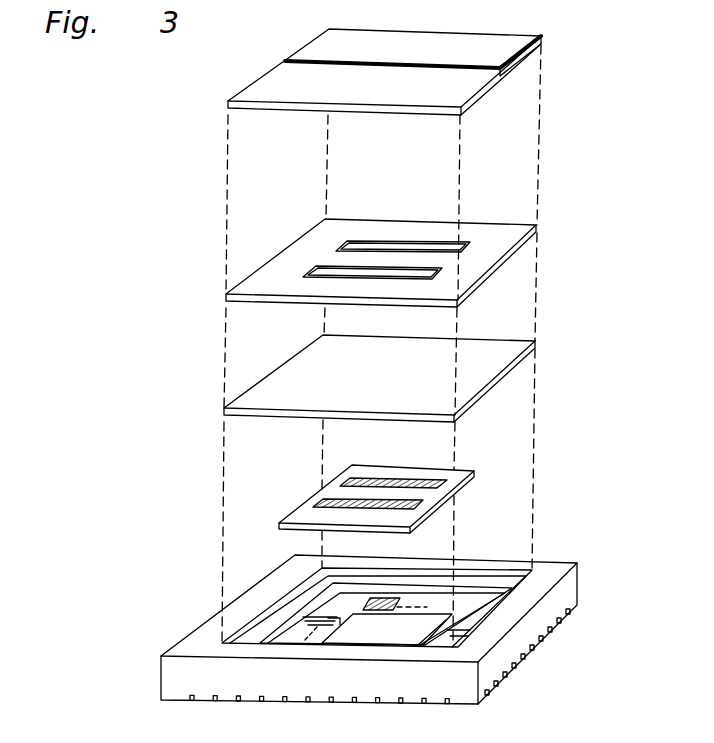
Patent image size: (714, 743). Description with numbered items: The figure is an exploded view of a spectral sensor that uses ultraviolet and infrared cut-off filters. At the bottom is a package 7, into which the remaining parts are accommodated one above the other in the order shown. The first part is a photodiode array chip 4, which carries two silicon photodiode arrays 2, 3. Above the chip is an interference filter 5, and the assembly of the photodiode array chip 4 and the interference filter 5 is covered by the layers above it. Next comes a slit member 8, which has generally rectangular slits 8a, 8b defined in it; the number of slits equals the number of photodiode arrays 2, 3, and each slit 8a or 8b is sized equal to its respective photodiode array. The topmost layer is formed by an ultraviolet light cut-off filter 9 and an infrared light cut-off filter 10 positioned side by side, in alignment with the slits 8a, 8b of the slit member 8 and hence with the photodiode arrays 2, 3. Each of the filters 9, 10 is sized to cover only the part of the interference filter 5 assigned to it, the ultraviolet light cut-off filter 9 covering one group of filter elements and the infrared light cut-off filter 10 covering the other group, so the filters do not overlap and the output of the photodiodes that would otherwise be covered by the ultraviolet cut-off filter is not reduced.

The silicon photodiode array 2 is at (313, 506).
The silicon photodiode array 3 is at (340, 485).
The photodiode array chip 4 is at (381, 472).
The interference filter 5 is at (499, 351).
The package 7 is at (550, 570).
The slit member 8 is at (384, 233).
The slit 8a is at (313, 277).
The slit 8b is at (343, 249).
The ultraviolet light cut-off filter 9 is at (462, 87).
The infrared light cut-off filter 10 is at (517, 34).